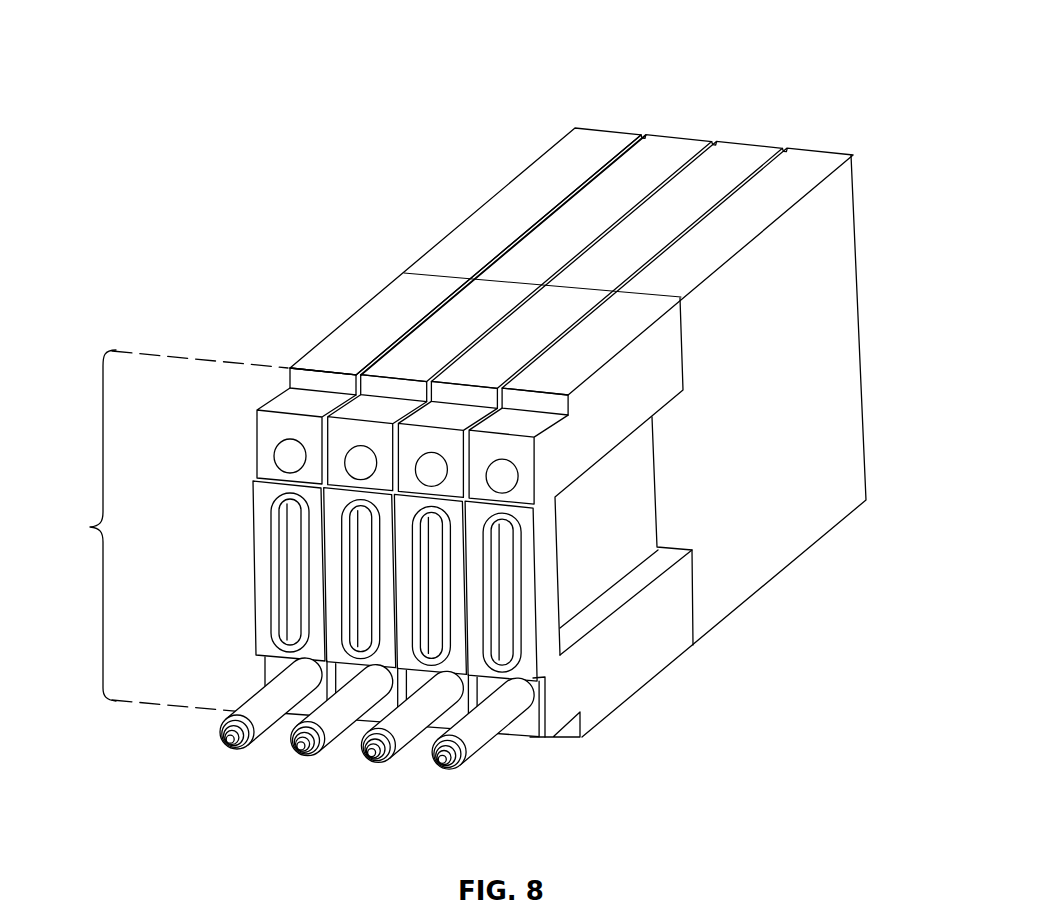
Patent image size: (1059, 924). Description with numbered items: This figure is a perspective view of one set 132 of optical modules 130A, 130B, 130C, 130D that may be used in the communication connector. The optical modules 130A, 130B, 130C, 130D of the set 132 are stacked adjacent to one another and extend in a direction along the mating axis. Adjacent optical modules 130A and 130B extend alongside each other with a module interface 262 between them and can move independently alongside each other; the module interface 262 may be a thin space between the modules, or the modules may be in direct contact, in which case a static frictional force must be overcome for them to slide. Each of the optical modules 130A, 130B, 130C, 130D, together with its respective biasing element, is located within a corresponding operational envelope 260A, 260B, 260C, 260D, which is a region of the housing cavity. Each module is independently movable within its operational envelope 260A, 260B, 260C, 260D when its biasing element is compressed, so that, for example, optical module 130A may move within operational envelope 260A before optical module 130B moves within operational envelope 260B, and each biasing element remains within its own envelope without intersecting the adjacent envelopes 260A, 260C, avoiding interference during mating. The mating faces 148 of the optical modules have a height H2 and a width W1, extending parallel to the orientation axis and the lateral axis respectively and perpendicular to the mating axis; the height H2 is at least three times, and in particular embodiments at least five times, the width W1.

The set of optical modules 132 is at (468, 407).
The optical module 130A is at (417, 397).
The optical module 130B is at (507, 421).
The optical module 130C is at (595, 406).
The optical module 130D is at (656, 433).
The operational envelope 260A is at (582, 152).
The operational envelope 260B is at (587, 148).
The operational envelope 260C is at (596, 140).
The operational envelope 260D is at (601, 147).
The module interface 262 is at (391, 332).
The mating face 148 is at (221, 599).
The width W1 is at (283, 405).
The height H2 is at (85, 525).